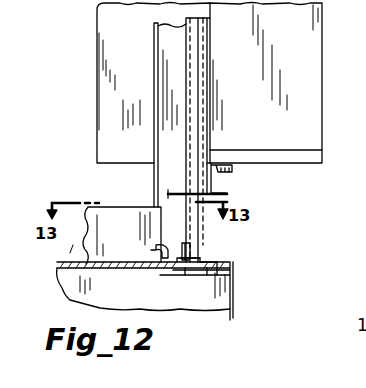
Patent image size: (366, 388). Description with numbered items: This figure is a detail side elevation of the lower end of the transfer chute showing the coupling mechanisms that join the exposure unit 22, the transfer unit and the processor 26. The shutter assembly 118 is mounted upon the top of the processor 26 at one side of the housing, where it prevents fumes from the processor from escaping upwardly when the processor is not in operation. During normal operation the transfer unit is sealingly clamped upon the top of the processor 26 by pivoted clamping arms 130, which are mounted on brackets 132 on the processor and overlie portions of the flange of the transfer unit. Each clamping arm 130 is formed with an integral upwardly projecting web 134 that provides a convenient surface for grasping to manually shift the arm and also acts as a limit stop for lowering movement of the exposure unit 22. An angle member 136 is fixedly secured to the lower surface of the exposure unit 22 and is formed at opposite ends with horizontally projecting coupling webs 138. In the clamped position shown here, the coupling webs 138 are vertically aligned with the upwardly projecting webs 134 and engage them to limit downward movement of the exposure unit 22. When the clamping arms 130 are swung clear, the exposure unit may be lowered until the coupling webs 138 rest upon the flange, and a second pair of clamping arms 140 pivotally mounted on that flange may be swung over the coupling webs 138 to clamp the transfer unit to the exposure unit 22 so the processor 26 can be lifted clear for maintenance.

The exposure unit 22 is at (306, 104).
The processor 26 is at (187, 302).
The shutter assembly 118 is at (132, 237).
The clamping arms 130 is at (196, 258).
The brackets 132 is at (200, 270).
The upwardly projecting web 134 is at (183, 268).
The angle member 136 is at (216, 180).
The coupling webs 138 is at (176, 193).
The second pair of clamping arms 140 is at (152, 250).